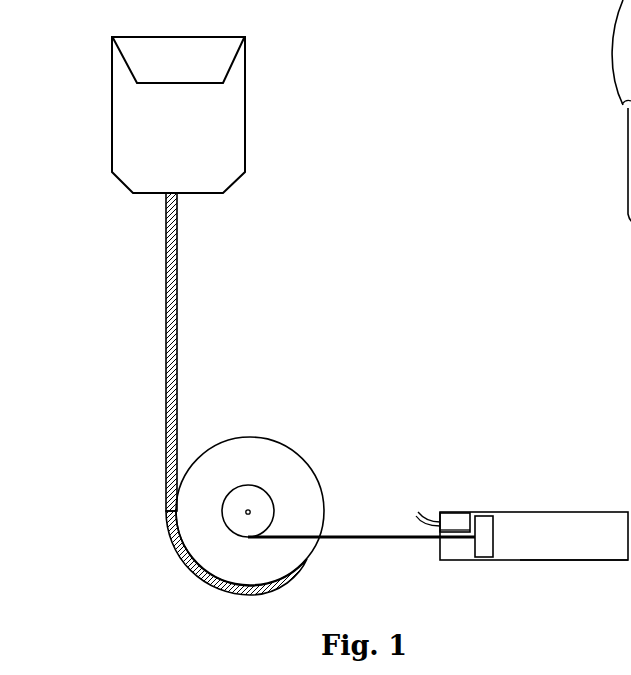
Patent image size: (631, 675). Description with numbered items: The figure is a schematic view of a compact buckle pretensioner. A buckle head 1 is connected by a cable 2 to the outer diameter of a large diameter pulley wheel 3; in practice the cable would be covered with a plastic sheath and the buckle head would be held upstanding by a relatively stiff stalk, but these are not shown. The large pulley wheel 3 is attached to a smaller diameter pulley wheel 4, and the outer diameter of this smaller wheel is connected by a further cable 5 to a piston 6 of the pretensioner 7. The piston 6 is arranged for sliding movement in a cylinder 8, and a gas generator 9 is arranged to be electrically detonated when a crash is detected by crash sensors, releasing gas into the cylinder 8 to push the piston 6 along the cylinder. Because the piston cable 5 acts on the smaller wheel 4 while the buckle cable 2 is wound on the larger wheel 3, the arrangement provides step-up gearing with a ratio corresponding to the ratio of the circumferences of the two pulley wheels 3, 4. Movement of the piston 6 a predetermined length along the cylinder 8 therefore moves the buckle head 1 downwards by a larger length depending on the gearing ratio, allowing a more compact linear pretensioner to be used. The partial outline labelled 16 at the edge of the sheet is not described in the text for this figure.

The buckle head 1 is at (233, 113).
The cable 2 is at (180, 313).
The large diameter pulley wheel 3 is at (288, 460).
The smaller diameter pulley wheel 4 is at (263, 507).
The cable 5 is at (363, 538).
The piston 6 is at (485, 557).
The pretensioner 7 is at (573, 503).
The cylinder 8 is at (595, 560).
The gas generator 9 is at (455, 512).
The element 16 is at (623, 182).